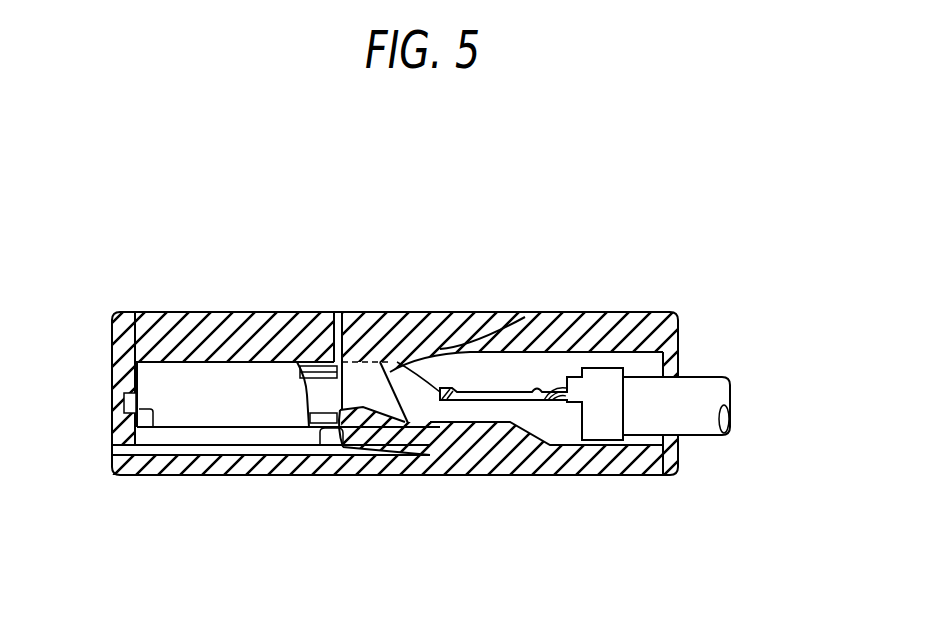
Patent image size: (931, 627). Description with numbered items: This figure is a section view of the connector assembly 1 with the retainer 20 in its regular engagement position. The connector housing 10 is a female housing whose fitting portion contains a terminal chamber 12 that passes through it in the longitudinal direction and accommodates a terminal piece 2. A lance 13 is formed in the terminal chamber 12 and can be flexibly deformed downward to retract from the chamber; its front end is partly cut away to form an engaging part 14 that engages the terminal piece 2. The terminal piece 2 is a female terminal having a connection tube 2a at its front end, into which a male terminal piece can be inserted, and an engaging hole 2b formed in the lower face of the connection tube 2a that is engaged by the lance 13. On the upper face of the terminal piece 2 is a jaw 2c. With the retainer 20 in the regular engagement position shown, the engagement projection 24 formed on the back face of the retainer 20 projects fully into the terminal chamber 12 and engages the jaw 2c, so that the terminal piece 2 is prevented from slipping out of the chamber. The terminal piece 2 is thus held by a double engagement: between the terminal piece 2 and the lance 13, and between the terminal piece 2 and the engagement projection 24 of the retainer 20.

The connector assembly 1 is at (440, 268).
The terminal piece 2 is at (503, 368).
The connection tube 2a is at (215, 398).
The engaging hole 2b is at (343, 447).
The jaw 2c is at (333, 362).
The connector housing 10 is at (216, 298).
The terminal chamber 12 is at (550, 362).
The lance 13 is at (388, 435).
The engaging part 14 is at (347, 312).
The retainer 20 is at (488, 293).
The engagement projection 24 is at (408, 423).